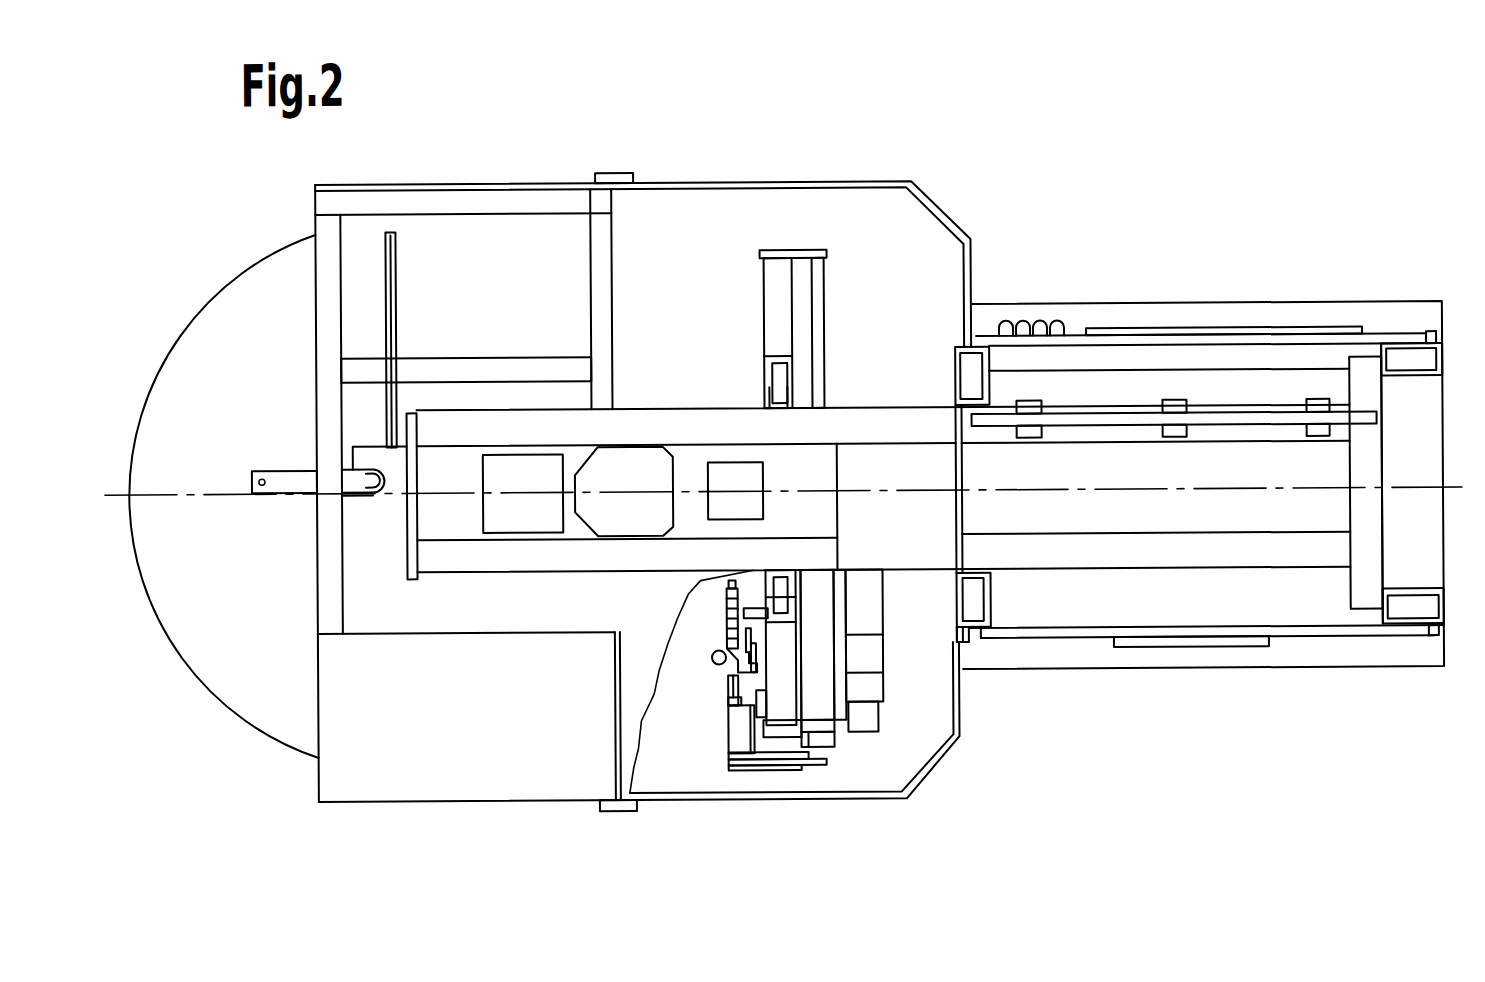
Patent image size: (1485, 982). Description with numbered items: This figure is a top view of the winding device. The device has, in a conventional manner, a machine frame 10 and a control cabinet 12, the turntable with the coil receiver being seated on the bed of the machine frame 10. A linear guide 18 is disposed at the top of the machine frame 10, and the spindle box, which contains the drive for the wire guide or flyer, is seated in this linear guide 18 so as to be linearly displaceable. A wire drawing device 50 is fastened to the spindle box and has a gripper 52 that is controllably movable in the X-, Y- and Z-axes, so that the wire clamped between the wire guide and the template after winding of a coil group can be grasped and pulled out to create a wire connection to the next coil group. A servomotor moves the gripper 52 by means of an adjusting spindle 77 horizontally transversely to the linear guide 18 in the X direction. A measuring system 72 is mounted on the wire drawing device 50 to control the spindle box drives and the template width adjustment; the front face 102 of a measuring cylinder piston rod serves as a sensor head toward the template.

The machine frame 10 is at (942, 750).
The control cabinet 12 is at (1167, 658).
The linear guide 18 is at (668, 422).
The wire drawing device 50 is at (883, 612).
The gripper 52 is at (725, 614).
The measuring system 72 is at (783, 771).
The adjusting spindle 77 is at (822, 350).
The front face of the piston rod 102 is at (725, 770).